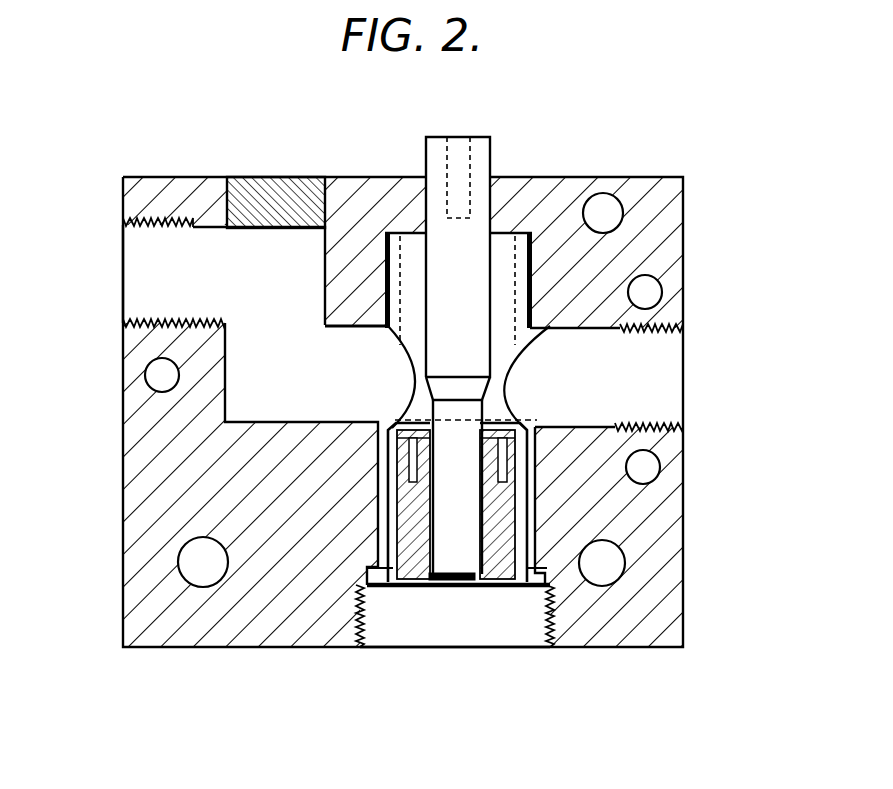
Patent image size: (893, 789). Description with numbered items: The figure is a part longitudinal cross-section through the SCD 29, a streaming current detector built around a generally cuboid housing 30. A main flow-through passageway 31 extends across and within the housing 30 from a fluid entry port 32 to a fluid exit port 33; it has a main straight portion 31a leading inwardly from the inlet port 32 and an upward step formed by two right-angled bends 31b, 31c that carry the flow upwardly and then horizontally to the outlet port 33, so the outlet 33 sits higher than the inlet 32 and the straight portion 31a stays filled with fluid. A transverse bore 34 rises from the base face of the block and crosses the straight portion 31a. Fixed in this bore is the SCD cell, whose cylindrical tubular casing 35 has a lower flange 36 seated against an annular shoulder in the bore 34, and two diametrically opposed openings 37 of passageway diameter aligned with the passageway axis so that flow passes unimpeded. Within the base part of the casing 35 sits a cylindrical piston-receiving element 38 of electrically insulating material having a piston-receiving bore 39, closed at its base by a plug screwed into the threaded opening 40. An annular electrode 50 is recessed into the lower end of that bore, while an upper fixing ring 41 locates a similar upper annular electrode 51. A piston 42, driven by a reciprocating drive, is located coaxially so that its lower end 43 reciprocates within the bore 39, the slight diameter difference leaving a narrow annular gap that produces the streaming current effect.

The SCD 29 is at (115, 173).
The housing 30 is at (686, 603).
The main flow-through passageway 31 is at (268, 397).
The main straight portion 31a is at (583, 362).
The right-angled bend 31b is at (298, 333).
The right-angled bend 31c is at (220, 295).
The fluid entry port 32 is at (652, 386).
The fluid exit port 33 is at (135, 278).
The transverse bore 34 is at (387, 590).
The cylindrical tubular casing 35 is at (540, 455).
The flange 36 is at (536, 590).
The openings 37 is at (547, 340).
The piston-receiving element 38 is at (543, 502).
The piston-receiving bore 39 is at (472, 586).
The threaded opening 40 is at (441, 629).
The upper fixing ring 41 is at (430, 435).
The piston 42 is at (458, 335).
The lower end 43 is at (439, 507).
The annular electrode 50 is at (430, 588).
The upper annular electrode 51 is at (485, 432).